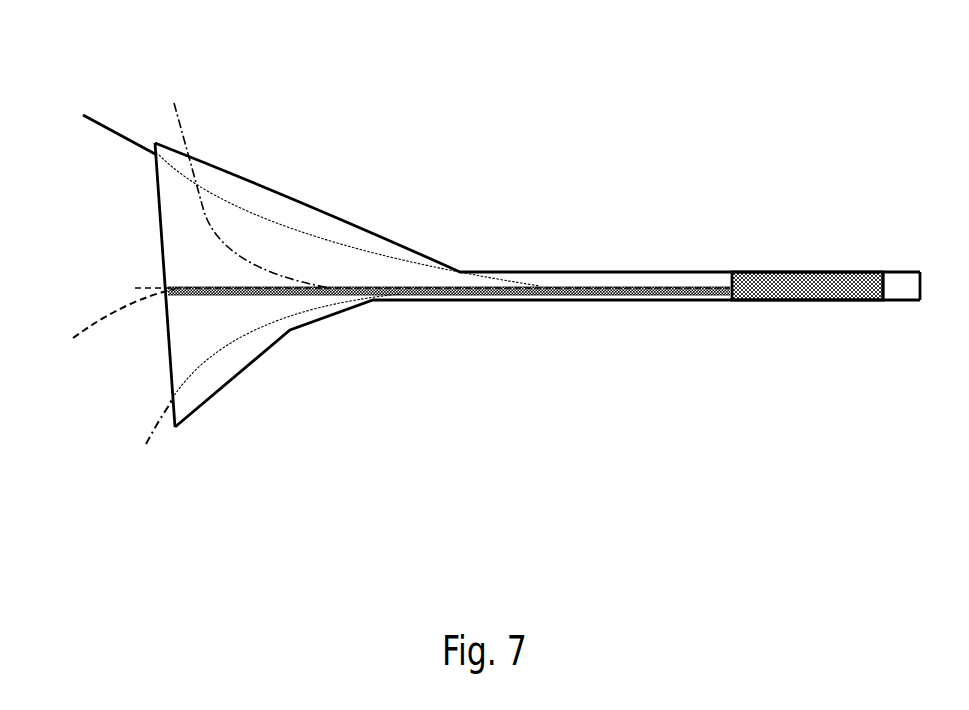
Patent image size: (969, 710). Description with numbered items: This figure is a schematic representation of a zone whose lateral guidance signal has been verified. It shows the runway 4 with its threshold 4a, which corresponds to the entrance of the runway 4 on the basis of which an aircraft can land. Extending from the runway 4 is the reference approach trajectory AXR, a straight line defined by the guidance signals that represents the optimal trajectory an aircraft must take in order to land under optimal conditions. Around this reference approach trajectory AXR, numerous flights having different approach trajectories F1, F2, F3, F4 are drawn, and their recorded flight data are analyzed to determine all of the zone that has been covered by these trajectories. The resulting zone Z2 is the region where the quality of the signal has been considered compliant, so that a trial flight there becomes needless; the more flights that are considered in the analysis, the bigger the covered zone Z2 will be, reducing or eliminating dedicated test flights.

The runway 4 is at (902, 303).
The threshold 4a is at (735, 271).
The zone Z2 is at (352, 225).
The reference approach trajectory AXR is at (150, 286).
The approach trajectory F1 is at (163, 427).
The approach trajectory F2 is at (87, 330).
The approach trajectory F3 is at (110, 128).
The approach trajectory F4 is at (183, 136).